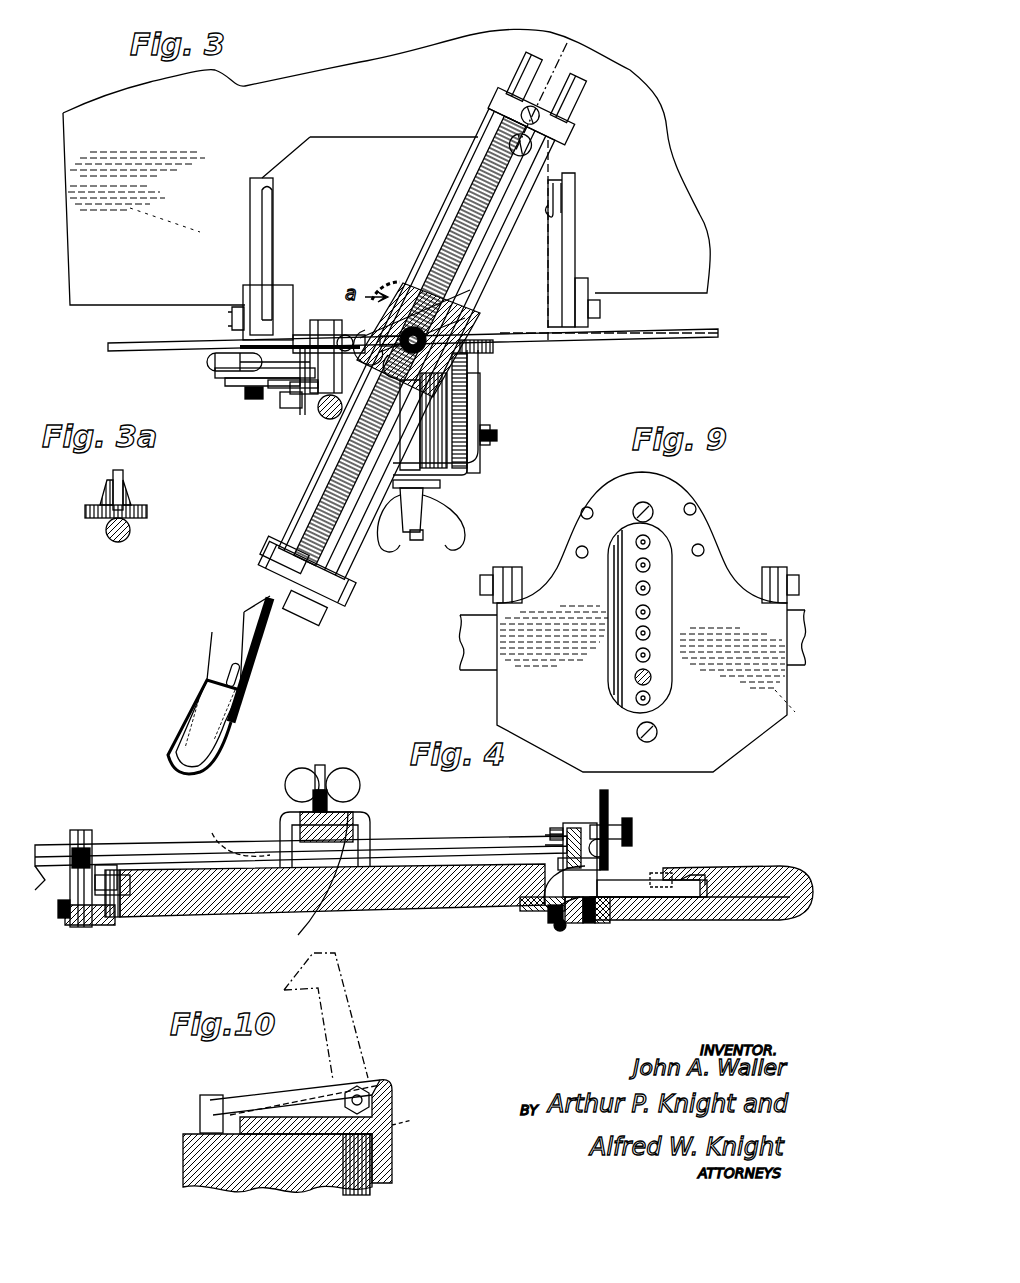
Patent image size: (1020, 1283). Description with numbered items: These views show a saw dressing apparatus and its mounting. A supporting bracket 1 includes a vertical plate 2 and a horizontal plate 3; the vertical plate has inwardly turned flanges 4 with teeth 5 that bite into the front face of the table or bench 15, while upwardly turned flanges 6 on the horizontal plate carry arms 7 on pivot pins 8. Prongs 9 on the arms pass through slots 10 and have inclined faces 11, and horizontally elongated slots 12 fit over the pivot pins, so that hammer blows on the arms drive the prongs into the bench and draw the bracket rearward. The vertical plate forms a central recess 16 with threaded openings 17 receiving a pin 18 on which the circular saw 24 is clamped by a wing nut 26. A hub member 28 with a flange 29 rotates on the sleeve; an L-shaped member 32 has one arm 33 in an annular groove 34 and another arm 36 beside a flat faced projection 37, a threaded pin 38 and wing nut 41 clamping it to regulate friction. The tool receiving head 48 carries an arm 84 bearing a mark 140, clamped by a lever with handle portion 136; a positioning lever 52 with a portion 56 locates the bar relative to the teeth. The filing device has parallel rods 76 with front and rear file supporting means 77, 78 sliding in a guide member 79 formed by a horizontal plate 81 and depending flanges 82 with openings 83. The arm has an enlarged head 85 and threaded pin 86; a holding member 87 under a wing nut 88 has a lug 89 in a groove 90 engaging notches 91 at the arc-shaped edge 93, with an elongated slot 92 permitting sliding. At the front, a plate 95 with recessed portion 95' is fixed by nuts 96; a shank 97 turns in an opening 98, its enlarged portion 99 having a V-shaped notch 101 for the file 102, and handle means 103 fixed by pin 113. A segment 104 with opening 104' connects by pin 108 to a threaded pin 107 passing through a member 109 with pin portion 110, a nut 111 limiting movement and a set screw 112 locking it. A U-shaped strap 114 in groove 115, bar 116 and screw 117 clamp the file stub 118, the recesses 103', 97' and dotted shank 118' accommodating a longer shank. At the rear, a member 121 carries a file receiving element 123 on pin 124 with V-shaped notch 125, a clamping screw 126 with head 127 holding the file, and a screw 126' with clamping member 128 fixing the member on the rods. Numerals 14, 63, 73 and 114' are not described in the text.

In FIG. 3, the supporting bracket 1 is at (566, 196).
In FIG. 9, the supporting bracket 1 is at (550, 580).
In FIG. 10, the supporting bracket 1 is at (392, 1122).
In FIG. 3, the vertical plate 2 is at (515, 338).
In FIG. 9, the vertical plate 2 is at (712, 725).
In FIG. 10, the vertical plate 2 is at (392, 1162).
In FIG. 3, the horizontal plate 3 is at (300, 165).
In FIG. 10, the horizontal plate 3 is at (300, 1165).
In FIG. 3, the inwardly turned flanges 4 is at (580, 20).
In FIG. 9, the inwardly turned flanges 4 is at (515, 567).
In FIG. 4, the inwardly turned flanges 4 is at (170, 800).
In FIG. 10, the inwardly turned flanges 4 is at (318, 1080).
In FIG. 10, the pointed projections or teeth 5 is at (416, 1128).
In FIG. 3, the upwardly turned flanges 6 is at (250, 225).
In FIG. 9, the upwardly turned flanges 6 is at (505, 567).
In FIG. 10, the upwardly turned flanges 6 is at (205, 1115).
In FIG. 3, the arms 7 is at (270, 232).
In FIG. 9, the arms 7 is at (530, 565).
In FIG. 10, the arms 7 is at (298, 1092).
In FIG. 3, the pivot pins 8 is at (232, 320).
In FIG. 9, the pivot pins 8 is at (535, 572).
In FIG. 10, the pivot pins 8 is at (372, 1090).
In FIG. 10, the prongs or points 9 is at (195, 1160).
In FIG. 3, the slots 10 is at (570, 226).
In FIG. 10, the slots 10 is at (230, 1160).
In FIG. 10, the inclined faces 11 is at (223, 1115).
In FIG. 10, the horizontally elongated slots 12 is at (362, 1075).
In FIG. 3, the shaft 14 is at (300, 410).
In FIG. 3, the table or bench 15 is at (668, 207).
In FIG. 10, the table or bench 15 is at (330, 1170).
In FIG. 9, the central recess 16 is at (685, 575).
In FIG. 9, the threaded openings 17 is at (650, 612).
In FIG. 9, the pin or bolt 18 is at (652, 680).
In FIG. 3, the circular saw 24 is at (665, 338).
In FIG. 3, the wing nut 26 is at (452, 548).
In FIG. 3, the hub member 28 is at (480, 440).
In FIG. 3, the flange 29 is at (495, 347).
In FIG. 3, the L-shaped member 32 is at (475, 472).
In FIG. 3, the arm 33 is at (440, 485).
In FIG. 3, the annular groove 34 is at (352, 540).
In FIG. 3, the arm 36 is at (475, 385).
In FIG. 3, the flat faced projection 37 is at (480, 410).
In FIG. 3, the threaded pin 38 is at (497, 438).
In FIG. 3, the wing nut 41 is at (497, 433).
In FIG. 3, the tool receiving and supporting head 48 is at (298, 395).
In FIG. 3, the positioning lever 52 is at (210, 360).
In FIG. 3, the portion 56 is at (230, 375).
In FIG. 3, the nut 63 is at (248, 394).
In FIG. 3, the block 73 is at (293, 410).
In FIG. 3, the parallel rods 76 is at (478, 222).
In FIG. 4, the parallel rods 76 is at (472, 838).
In FIG. 3, the front file supporting means 77 is at (270, 542).
In FIG. 4, the front file supporting means 77 is at (573, 800).
In FIG. 3, the rear file supporting means 78 is at (492, 98).
In FIG. 4, the rear file supporting means 78 is at (70, 840).
In FIG. 3, the guide member 79 is at (378, 320).
In FIG. 3A, the guide member 79 is at (78, 520).
In FIG. 4, the guide member 79 is at (360, 800).
In FIG. 3, the horizontal plate 81 is at (395, 340).
In FIG. 4, the horizontal plate 81 is at (358, 815).
In FIG. 4, the depending flanges 82 is at (300, 820).
In FIG. 4, the openings 83 is at (215, 833).
In FIG. 3, the arm 84 is at (328, 335).
In FIG. 3A, the arm 84 is at (122, 542).
In FIG. 4, the enlarged head 85 is at (372, 818).
In FIG. 3, the threaded pin 86 is at (465, 306).
In FIG. 4, the threaded pin 86 is at (325, 768).
In FIG. 3, the holding member 87 is at (455, 320).
In FIG. 3A, the holding member 87 is at (135, 505).
In FIG. 4, the holding member 87 is at (292, 815).
In FIG. 3A, the wing nut 88 is at (118, 478).
In FIG. 4, the wing nut 88 is at (300, 770).
In FIG. 3, the lug 89 is at (410, 420).
In FIG. 3A, the lug 89 is at (130, 528).
In FIG. 3, the groove 90 is at (345, 335).
In FIG. 3A, the groove 90 is at (112, 540).
In FIG. 3, the notches 91 is at (410, 318).
In FIG. 3A, the notches 91 is at (105, 518).
In FIG. 3, the elongated slot 92 is at (470, 306).
In FIG. 3A, the elongated slot 92 is at (95, 506).
In FIG. 4, the elongated slot 92 is at (348, 772).
In FIG. 3, the arc-shaped edge 93 is at (385, 295).
In FIG. 4, the plate 95 is at (571, 848).
In FIG. 4, the recessed portion 95' is at (546, 811).
In FIG. 3, the nuts 96 is at (258, 600).
In FIG. 4, the shank or stem 97 is at (618, 926).
In FIG. 4, the cut away portion 97' is at (607, 943).
In FIG. 4, the opening 98 is at (575, 925).
In FIG. 4, the enlarged portion 99 is at (548, 915).
In FIG. 4, the V-shaped notch 101 is at (530, 910).
In FIG. 3, the three cornered file 102 is at (330, 510).
In FIG. 4, the three cornered file 102 is at (455, 905).
In FIG. 3, the handle means 103 is at (182, 727).
In FIG. 4, the handle means 103 is at (701, 878).
In FIG. 3, the recess 103' is at (208, 666).
In FIG. 4, the recess 103' is at (718, 861).
In FIG. 4, the segment 104 is at (652, 869).
In FIG. 4, the opening 104' is at (684, 863).
In FIG. 3, the threaded pin 107 is at (330, 612).
In FIG. 4, the threaded pin 107 is at (610, 805).
In FIG. 4, the pin 108 is at (608, 848).
In FIG. 3, the member 109 is at (330, 580).
In FIG. 4, the member 109 is at (595, 825).
In FIG. 4, the pin portion 110 is at (560, 850).
In FIG. 3, the nut 111 is at (335, 598).
In FIG. 4, the nut 111 is at (615, 822).
In FIG. 3, the set screw 112 is at (265, 628).
In FIG. 4, the set screw 112 is at (632, 830).
In FIG. 4, the pin 113 is at (612, 925).
In FIG. 4, the U-shaped strap 114 is at (535, 962).
In FIG. 3, the clamp 114' is at (257, 554).
In FIG. 4, the groove 115 is at (550, 930).
In FIG. 3, the pin or bar 116 is at (335, 520).
In FIG. 4, the pin or bar 116 is at (525, 860).
In FIG. 4, the screw 117 is at (560, 932).
In FIG. 4, the short stub 118 is at (498, 936).
In FIG. 4, the file shank 118' is at (695, 924).
In FIG. 4, the member 121 is at (104, 865).
In FIG. 4, the file receiving element 123 is at (108, 925).
In FIG. 4, the pin 124 is at (82, 928).
In FIG. 4, the V-shaped notch 125 is at (125, 917).
In FIG. 4, the clamping screw 126 is at (210, 924).
In FIG. 3, the screw 126' is at (513, 65).
In FIG. 4, the screw 126' is at (83, 788).
In FIG. 3, the head 127 is at (510, 140).
In FIG. 4, the head 127 is at (124, 875).
In FIG. 4, the clamping member 128 is at (70, 870).
In FIG. 3, the handle portion 136 is at (290, 386).
In FIG. 3, the mark 140 is at (326, 330).